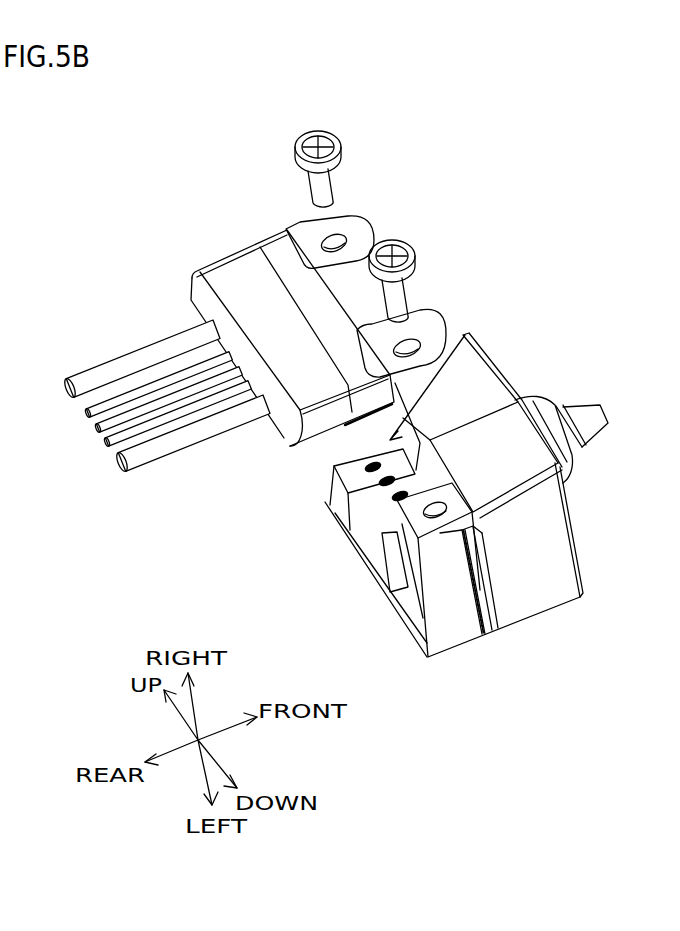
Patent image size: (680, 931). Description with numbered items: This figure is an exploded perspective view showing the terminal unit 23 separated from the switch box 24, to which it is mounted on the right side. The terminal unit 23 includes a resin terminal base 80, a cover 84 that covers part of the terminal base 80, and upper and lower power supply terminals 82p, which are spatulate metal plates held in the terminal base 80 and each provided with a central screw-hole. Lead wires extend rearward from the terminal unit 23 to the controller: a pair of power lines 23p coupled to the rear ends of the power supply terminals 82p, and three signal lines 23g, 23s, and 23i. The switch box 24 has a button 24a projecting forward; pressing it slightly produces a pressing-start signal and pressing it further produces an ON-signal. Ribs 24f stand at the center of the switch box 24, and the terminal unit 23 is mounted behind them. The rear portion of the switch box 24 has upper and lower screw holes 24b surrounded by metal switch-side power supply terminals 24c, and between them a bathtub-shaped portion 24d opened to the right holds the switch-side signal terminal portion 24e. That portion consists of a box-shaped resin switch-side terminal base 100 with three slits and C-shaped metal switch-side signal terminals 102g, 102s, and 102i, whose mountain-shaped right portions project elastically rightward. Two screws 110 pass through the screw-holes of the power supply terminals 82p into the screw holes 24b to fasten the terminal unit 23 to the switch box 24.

The terminal unit 23 is at (133, 186).
The power line 23p is at (78, 388).
The signal line 23g is at (118, 412).
The signal line 23s is at (160, 428).
The signal line 23i is at (190, 418).
The terminal base 80 is at (269, 246).
The cover 84 is at (222, 268).
The power supply terminal 82p is at (353, 232).
The screw 110 is at (315, 132).
The switch box 24 is at (553, 594).
The button 24a is at (602, 417).
The screw hole 24b is at (466, 585).
The switch-side power supply terminal 24c is at (424, 586).
The bathtub-shaped portion 24d is at (372, 550).
The switch-side signal terminal portion 24e is at (464, 333).
The rib 24f is at (486, 578).
The switch-side terminal base 100 is at (412, 480).
The switch-side signal terminal 102g is at (372, 458).
The switch-side signal terminal 102s is at (383, 490).
The switch-side signal terminal 102i is at (380, 525).